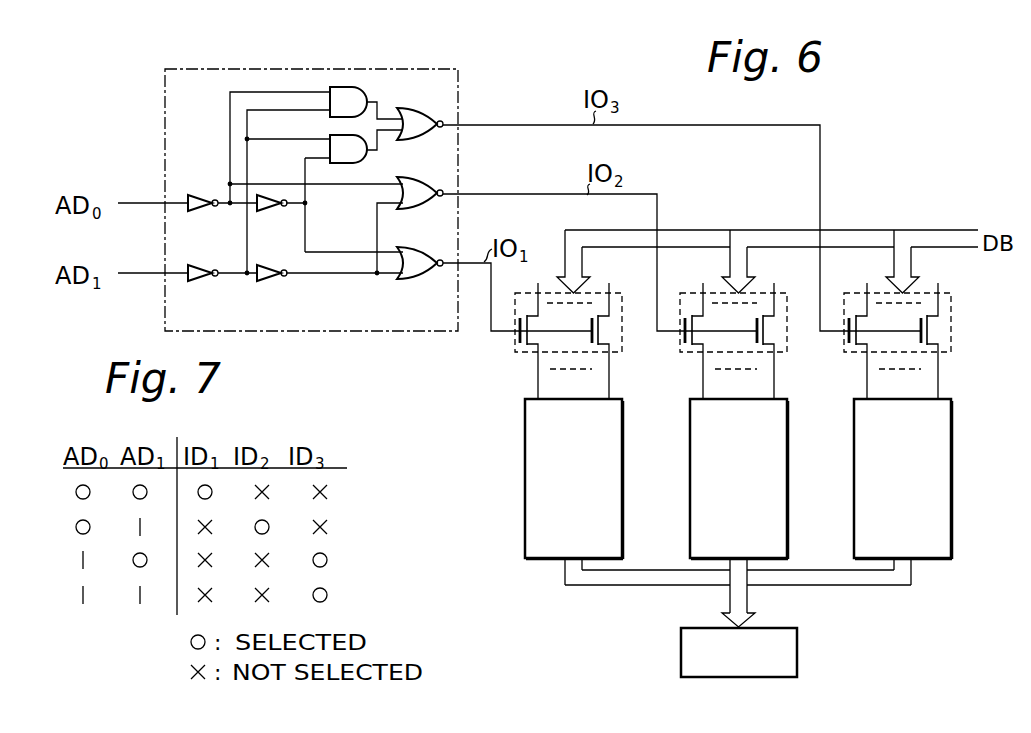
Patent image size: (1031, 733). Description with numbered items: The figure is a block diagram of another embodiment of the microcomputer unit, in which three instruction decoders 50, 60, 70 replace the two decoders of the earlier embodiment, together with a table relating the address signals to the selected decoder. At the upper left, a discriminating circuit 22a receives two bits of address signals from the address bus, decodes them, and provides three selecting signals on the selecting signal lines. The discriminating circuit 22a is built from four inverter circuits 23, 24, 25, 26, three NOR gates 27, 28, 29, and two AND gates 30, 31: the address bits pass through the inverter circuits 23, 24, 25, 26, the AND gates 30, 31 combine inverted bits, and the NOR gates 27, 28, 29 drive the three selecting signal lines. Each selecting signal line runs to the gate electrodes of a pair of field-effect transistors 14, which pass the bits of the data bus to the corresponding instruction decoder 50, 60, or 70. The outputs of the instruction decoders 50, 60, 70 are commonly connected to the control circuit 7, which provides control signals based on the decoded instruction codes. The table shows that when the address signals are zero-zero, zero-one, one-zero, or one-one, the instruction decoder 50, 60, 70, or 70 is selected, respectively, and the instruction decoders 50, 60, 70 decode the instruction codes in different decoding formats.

The control circuit 7 is at (798, 652).
The field-effect transistors 14 is at (516, 338).
The discriminating circuit 22a is at (438, 65).
The inverter circuit 23 is at (199, 282).
The inverter circuit 24 is at (199, 212).
The inverter circuit 25 is at (268, 282).
The inverter circuit 26 is at (268, 212).
The NOR gate 27 is at (408, 278).
The NOR gate 28 is at (416, 208).
The NOR gate 29 is at (415, 139).
The AND gate 30 is at (358, 164).
The AND gate 31 is at (356, 86).
The instruction decoder 50 is at (526, 502).
The instruction decoder 60 is at (691, 502).
The instruction decoder 70 is at (857, 492).